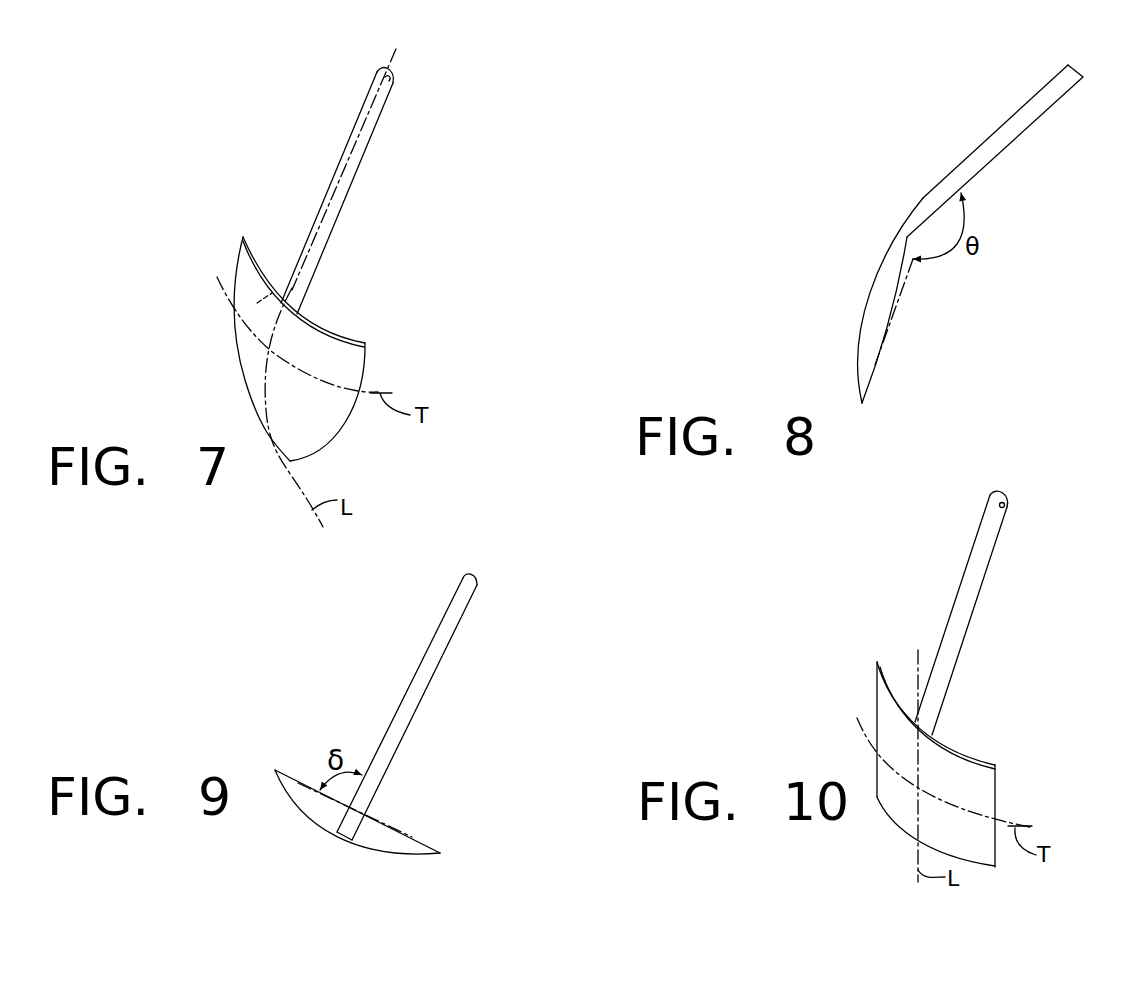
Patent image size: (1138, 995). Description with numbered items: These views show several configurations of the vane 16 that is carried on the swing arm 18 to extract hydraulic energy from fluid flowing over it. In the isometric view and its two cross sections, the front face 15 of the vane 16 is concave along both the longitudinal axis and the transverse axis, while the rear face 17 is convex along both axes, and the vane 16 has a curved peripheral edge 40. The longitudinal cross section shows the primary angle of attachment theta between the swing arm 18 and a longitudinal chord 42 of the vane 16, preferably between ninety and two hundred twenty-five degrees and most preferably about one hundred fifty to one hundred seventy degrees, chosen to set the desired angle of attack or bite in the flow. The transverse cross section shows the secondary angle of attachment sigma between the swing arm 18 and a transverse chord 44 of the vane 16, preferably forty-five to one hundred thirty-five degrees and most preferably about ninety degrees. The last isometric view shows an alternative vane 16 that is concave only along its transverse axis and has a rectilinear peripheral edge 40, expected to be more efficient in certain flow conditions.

In FIG. 7, the front face 15 is at (275, 287).
In FIG. 8, the front face 15 is at (860, 332).
In FIG. 9, the front face 15 is at (412, 840).
In FIG. 7, the vane 16 is at (362, 368).
In FIG. 7, the rear face 17 is at (242, 358).
In FIG. 8, the rear face 17 is at (870, 288).
In FIG. 9, the rear face 17 is at (316, 823).
In FIG. 7, the swing arm 18 is at (352, 172).
In FIG. 8, the swing arm 18 is at (1023, 126).
In FIG. 9, the swing arm 18 is at (455, 620).
In FIG. 10, the swing arm 18 is at (989, 563).
In FIG. 7, the peripheral edge 40 is at (327, 450).
In FIG. 10, the peripheral edge 40 is at (998, 800).
In FIG. 8, the longitudinal chord 42 is at (877, 372).
In FIG. 9, the transverse chord 44 is at (392, 827).